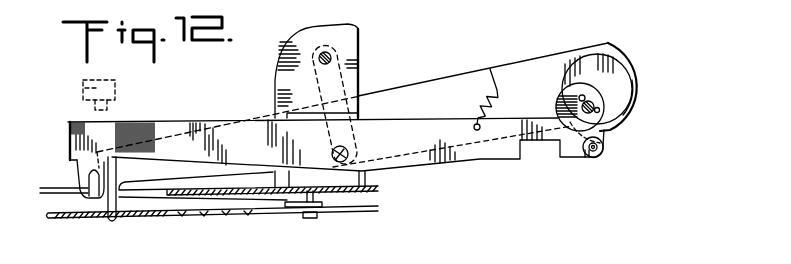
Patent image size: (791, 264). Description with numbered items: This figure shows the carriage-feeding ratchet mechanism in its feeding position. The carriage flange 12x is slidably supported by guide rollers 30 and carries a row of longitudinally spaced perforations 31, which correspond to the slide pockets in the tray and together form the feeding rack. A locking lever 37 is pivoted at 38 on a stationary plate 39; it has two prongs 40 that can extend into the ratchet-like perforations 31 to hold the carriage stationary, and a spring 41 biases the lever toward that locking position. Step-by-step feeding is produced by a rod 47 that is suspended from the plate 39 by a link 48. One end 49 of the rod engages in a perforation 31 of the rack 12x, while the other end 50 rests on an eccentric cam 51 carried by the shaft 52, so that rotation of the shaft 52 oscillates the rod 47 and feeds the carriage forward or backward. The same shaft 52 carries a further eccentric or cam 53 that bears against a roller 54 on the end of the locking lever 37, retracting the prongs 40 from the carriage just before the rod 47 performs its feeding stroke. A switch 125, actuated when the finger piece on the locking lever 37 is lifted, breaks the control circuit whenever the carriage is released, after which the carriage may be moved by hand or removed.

The flange 12x is at (211, 214).
The guide roller 30 is at (305, 219).
The perforation 31 is at (78, 219).
The locking lever 37 is at (470, 160).
The pivot 38 is at (349, 149).
The stationary plate 39 is at (359, 34).
The prong 40 is at (82, 190).
The spring 41 is at (483, 90).
The rod 47 is at (422, 86).
The link 48 is at (360, 67).
The rod end 49 is at (112, 221).
The rod end 50 is at (620, 58).
The eccentric cam 51 is at (622, 91).
The shaft 52 is at (612, 114).
The cam 53 is at (600, 133).
The roller 54 is at (592, 160).
The switch 125 is at (82, 89).